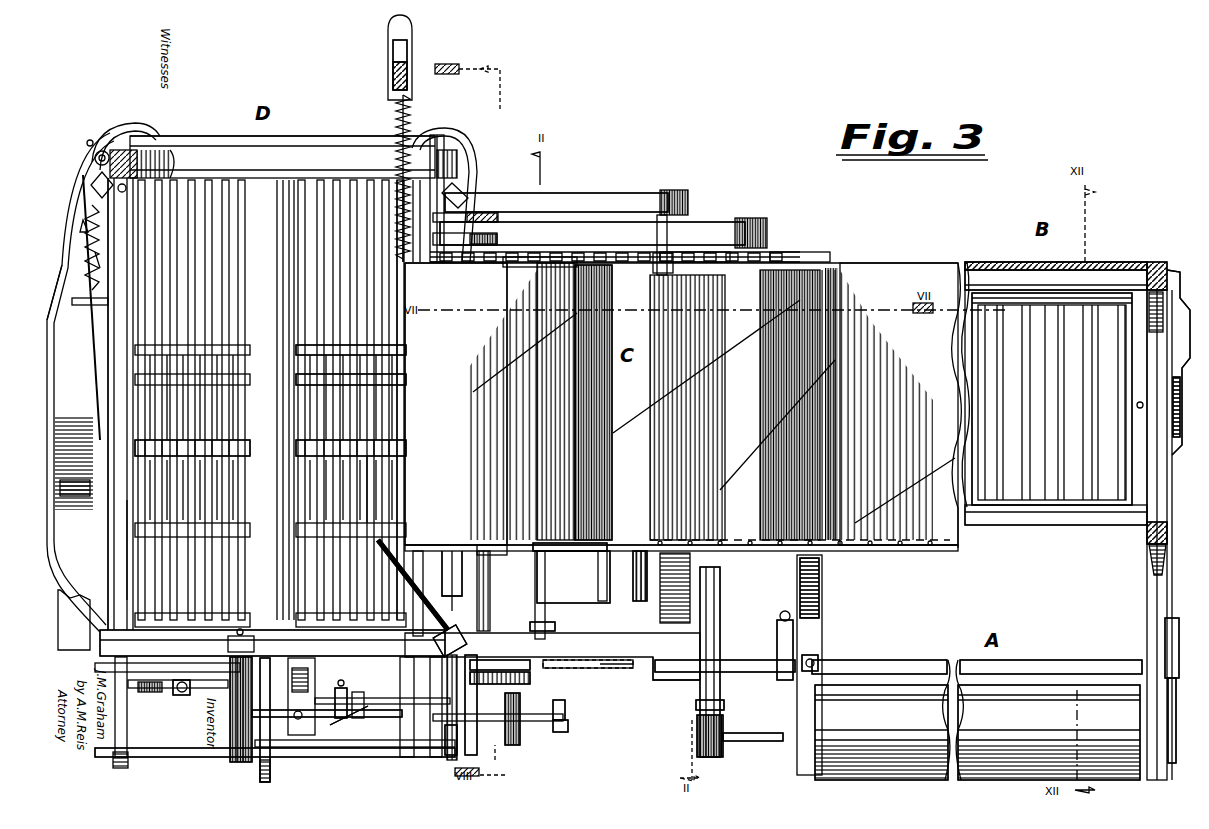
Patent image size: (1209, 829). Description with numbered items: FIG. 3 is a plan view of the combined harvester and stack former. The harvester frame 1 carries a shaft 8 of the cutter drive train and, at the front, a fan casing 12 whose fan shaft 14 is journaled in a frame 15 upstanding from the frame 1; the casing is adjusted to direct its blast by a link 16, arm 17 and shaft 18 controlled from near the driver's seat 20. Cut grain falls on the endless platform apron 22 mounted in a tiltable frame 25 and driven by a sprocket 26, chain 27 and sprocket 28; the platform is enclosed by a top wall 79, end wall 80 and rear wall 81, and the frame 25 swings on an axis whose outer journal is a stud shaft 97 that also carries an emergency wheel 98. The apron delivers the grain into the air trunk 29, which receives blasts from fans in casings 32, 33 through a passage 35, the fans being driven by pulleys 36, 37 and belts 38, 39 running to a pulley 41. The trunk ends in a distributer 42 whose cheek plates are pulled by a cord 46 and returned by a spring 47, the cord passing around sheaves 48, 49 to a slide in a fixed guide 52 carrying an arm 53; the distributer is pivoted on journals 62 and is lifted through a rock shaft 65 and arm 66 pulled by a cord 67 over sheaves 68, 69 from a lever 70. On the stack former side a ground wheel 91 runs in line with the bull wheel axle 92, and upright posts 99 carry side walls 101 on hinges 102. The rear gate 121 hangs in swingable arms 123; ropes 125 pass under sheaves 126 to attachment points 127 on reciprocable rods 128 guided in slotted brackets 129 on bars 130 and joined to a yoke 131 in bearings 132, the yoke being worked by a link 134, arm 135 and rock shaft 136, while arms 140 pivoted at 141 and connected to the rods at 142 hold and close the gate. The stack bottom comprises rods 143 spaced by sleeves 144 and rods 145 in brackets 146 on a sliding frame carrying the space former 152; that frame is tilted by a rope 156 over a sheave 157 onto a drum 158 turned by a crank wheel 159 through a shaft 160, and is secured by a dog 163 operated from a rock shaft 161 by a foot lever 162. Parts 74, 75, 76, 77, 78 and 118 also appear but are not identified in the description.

The frame of the harvesting mechanism 1 is at (1045, 276).
The shaft 8 is at (578, 598).
The casing 12 is at (977, 732).
The shaft 14 is at (752, 745).
The frame 15 is at (1156, 265).
The link 16 is at (782, 712).
The arm 17 is at (794, 651).
The shaft 18 is at (910, 661).
The driver's seat 20 is at (820, 664).
The endless platform apron 22 is at (1040, 521).
The frame 25 is at (1088, 296).
The sprocket 26 is at (810, 262).
The chain 27 is at (690, 250).
The sprocket 28 is at (456, 404).
The air trunk 29 is at (585, 500).
The fan casing 32 is at (775, 405).
The fan casing 33 is at (672, 407).
The passage 35 is at (605, 391).
The pulley 36 is at (762, 222).
The pulley 37 is at (672, 195).
The belt 38 is at (612, 200).
The belt 39 is at (716, 232).
The pulley 41 is at (496, 214).
The distributer 42 is at (370, 356).
The cord 46 is at (418, 531).
The spring 47 is at (395, 118).
The sheave 48 is at (465, 641).
The sheave 49 is at (568, 662).
The fixed guide 52 is at (490, 582).
The arm 53 is at (500, 545).
The journals 62 is at (546, 250).
The rock shaft 65 is at (549, 618).
The arm 66 is at (545, 648).
The cord 67 is at (614, 661).
The sheave 68 is at (672, 668).
The sheave 69 is at (500, 691).
The hand or foot lever 70 is at (470, 745).
The rod section 74 is at (392, 74).
The rod head 75 is at (392, 56).
The pulley 76 is at (690, 736).
The hub 77 is at (708, 701).
The pulley 78 is at (722, 588).
The top wall 79 is at (900, 280).
The end wall 80 is at (1173, 318).
The rear wall 81 is at (970, 270).
The ground wheel 91 is at (76, 496).
The bull wheel axle 92 is at (58, 420).
The stud shaft 97 is at (1140, 411).
The emergency wheel 98 is at (1174, 396).
The upright posts 99 is at (124, 152).
The side walls 101 is at (108, 314).
The hinges 102 is at (170, 164).
The bottom rail 118 is at (386, 746).
The gate 121 is at (322, 138).
The swingable arms 123 is at (471, 146).
The ropes 125 is at (88, 212).
The sheaves 126 is at (92, 186).
The points of attachment 127 is at (83, 226).
The reciprocable rods 128 is at (472, 172).
The slotted brackets 129 is at (53, 288).
The bars 130 is at (110, 334).
The yoke 131 is at (96, 668).
The bearings 132 is at (97, 258).
The link 134 is at (272, 643).
The arm 135 is at (446, 758).
The rock shaft 136 is at (300, 760).
The arms 140 is at (88, 140).
The pivot 141 is at (130, 546).
The pivot 142 is at (94, 147).
The longitudinal rods 143 is at (398, 292).
The loose sleeves 144 is at (398, 410).
The rods 145 is at (400, 476).
The upstanding brackets 146 is at (400, 449).
The space former 152 is at (271, 400).
The rope 156 is at (228, 648).
The sheave 157 is at (245, 633).
The drum 158 is at (228, 700).
The crank wheel 159 is at (514, 746).
The shaft 160 is at (330, 720).
The rock shaft 161 is at (386, 720).
The foot lever 162 is at (562, 704).
The dog 163 is at (384, 702).